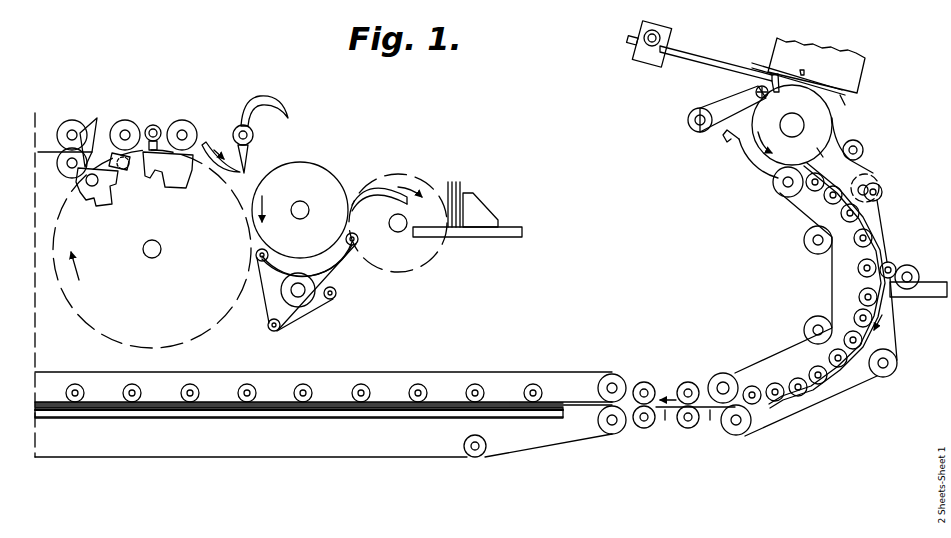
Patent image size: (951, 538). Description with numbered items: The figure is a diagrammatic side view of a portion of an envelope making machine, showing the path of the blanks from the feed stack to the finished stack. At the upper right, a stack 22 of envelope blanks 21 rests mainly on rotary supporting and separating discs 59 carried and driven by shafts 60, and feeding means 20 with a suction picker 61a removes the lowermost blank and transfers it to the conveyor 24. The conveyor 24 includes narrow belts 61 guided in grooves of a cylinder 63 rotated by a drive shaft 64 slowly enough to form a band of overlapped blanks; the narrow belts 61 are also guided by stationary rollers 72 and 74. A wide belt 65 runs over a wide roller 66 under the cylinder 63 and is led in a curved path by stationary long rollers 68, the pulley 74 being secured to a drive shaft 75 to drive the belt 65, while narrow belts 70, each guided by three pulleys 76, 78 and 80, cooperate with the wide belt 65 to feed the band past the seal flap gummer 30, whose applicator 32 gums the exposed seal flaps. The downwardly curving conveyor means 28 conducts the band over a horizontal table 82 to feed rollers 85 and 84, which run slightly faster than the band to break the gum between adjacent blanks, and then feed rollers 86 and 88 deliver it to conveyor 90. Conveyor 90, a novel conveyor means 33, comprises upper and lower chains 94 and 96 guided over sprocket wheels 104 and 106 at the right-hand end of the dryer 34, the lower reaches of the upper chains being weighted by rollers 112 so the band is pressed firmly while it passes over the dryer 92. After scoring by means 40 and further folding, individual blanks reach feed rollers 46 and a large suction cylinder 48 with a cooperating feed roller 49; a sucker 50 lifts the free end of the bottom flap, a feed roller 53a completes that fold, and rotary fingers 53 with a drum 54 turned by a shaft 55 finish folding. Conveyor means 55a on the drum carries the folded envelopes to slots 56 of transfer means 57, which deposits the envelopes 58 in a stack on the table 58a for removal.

The feeding means 20 is at (750, 87).
The envelope blanks 21 is at (812, 78).
The stack 22 is at (822, 40).
The conveyor 24 is at (860, 180).
The curved conveyor means 28 is at (892, 229).
The seal flap gummer 30 is at (928, 278).
The applicator 32 is at (894, 264).
The conveyor means 33 is at (328, 399).
The dryer 34 is at (367, 424).
The scoring means 40 is at (138, 168).
The feed rollers 46 is at (82, 134).
The suction cylinder 48 is at (134, 179).
The feed roller 49 is at (125, 120).
The sucker 50 is at (154, 150).
The rotary fingers 53 is at (272, 102).
The feed roller 53a is at (186, 123).
The drum 54 is at (318, 170).
The shaft 55 is at (309, 210).
The conveyor means 55a is at (341, 261).
The slots 56 is at (366, 198).
The transfer means 57 is at (416, 178).
The envelopes 58 is at (460, 186).
The table 58a is at (478, 237).
The rotary supporting and separating discs 59 is at (850, 106).
The shafts 60 is at (802, 72).
The narrow belts 61 is at (842, 140).
The suction picker 61a is at (708, 62).
The cylinder 63 is at (828, 160).
The drive shaft 64 is at (793, 122).
The wide belt 65 is at (830, 280).
The wide roller 66 is at (772, 186).
The stationary long rollers 68 is at (851, 222).
The narrow belts 70 is at (892, 312).
The stationary rollers 72 is at (864, 150).
The pulley 74 is at (885, 193).
The drive shaft 75 is at (724, 380).
The pulley 76 is at (883, 183).
The pulley 78 is at (898, 368).
The pulley 80 is at (737, 434).
The horizontal table 82 is at (694, 424).
The feed roller 84 is at (688, 428).
The feed roller 85 is at (688, 382).
The feed roller 86 is at (645, 382).
The feed roller 88 is at (643, 428).
The conveyor 90 is at (564, 373).
The dryer 92 is at (228, 418).
The upper chain 94 is at (266, 401).
The lower chain 96 is at (288, 408).
The sprocket wheel 104 is at (617, 375).
The sprocket wheel 106 is at (613, 434).
The rollers 112 is at (82, 387).